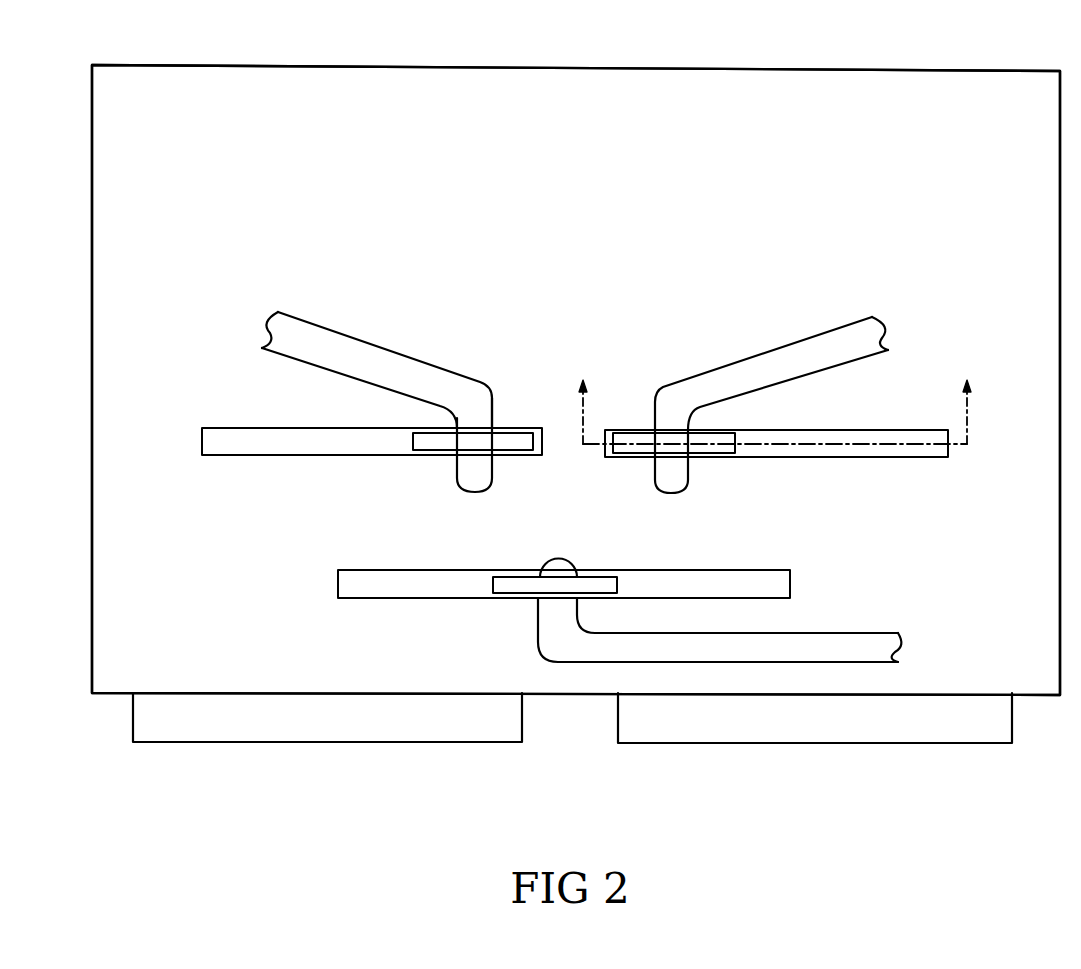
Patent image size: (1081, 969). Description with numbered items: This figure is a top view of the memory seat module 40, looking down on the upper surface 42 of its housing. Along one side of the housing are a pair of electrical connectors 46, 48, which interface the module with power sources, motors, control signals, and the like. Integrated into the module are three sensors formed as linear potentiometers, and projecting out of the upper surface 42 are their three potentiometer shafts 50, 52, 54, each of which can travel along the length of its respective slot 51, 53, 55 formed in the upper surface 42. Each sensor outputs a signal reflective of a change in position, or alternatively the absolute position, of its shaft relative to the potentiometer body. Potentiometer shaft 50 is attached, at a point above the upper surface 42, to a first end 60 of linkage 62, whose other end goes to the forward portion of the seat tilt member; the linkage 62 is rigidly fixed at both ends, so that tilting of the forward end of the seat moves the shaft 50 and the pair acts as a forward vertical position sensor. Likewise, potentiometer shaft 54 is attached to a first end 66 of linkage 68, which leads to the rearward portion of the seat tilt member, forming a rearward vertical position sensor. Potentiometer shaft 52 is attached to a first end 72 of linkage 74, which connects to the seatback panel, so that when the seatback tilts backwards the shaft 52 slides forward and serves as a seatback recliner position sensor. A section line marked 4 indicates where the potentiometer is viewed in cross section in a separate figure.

The memory seat module 40 is at (1063, 54).
The upper surface 42 is at (198, 155).
The electrical connector 46 is at (201, 745).
The electrical connector 48 is at (951, 745).
The potentiometer shaft 50 is at (433, 443).
The slot 51 is at (240, 443).
The potentiometer shaft 52 is at (602, 588).
The slot 53 is at (758, 588).
The potentiometer shaft 54 is at (627, 438).
The slot 55 is at (934, 456).
The first end of linkage 60 is at (481, 418).
The linkage 62 is at (366, 347).
The first end of linkage 66 is at (670, 408).
The linkage 68 is at (735, 368).
The first end of linkage 72 is at (560, 570).
The linkage 74 is at (840, 640).
The section line 4- 4 is at (777, 402).